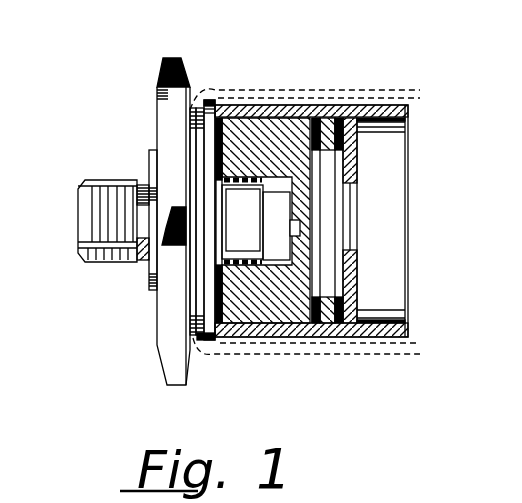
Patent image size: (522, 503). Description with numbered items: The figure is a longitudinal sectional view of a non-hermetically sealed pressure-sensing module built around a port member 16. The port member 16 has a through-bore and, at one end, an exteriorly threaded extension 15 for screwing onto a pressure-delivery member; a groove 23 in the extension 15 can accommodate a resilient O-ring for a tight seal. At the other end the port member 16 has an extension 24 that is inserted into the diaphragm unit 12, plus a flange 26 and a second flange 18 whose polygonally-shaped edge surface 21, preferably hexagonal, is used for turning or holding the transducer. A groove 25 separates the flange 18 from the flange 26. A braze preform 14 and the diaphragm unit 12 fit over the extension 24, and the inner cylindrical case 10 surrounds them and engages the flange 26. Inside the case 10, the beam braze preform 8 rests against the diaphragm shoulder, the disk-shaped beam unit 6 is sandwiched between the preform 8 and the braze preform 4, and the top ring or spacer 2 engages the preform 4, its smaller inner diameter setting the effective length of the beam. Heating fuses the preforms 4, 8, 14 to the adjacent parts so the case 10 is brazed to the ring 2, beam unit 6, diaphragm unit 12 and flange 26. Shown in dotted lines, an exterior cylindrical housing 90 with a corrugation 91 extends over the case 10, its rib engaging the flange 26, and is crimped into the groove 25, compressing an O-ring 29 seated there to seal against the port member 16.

The top ring or spacer 2 is at (361, 300).
The braze preform 4 is at (350, 294).
The beam unit 6 is at (343, 237).
The beam braze preform 8 is at (313, 318).
The inner cylindrical case 10 is at (300, 106).
The diaphragm unit 12 is at (258, 125).
The braze preform 14 is at (222, 120).
The exteriorly threaded extension 15 is at (94, 261).
The port member 16 is at (93, 141).
The second flange 18 is at (157, 115).
The polygonally-shaped edge surface 21 is at (173, 58).
The groove 23 is at (147, 184).
The extension 24 is at (249, 222).
The groove 25 is at (197, 281).
The flange 26 is at (205, 296).
The O-ring 29 is at (201, 100).
The exterior cylindrical housing 90 is at (383, 93).
The corrugation 91 is at (235, 358).